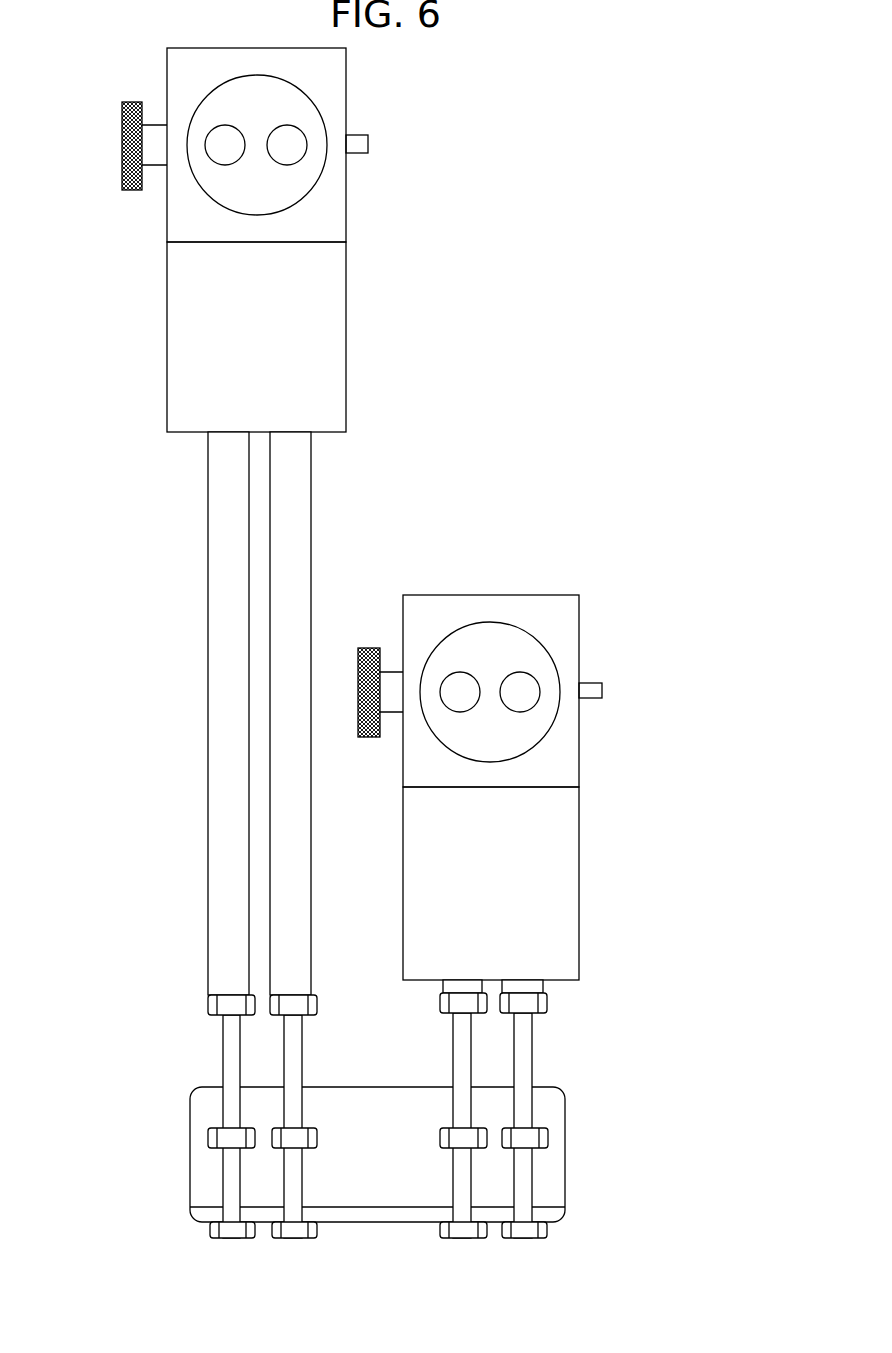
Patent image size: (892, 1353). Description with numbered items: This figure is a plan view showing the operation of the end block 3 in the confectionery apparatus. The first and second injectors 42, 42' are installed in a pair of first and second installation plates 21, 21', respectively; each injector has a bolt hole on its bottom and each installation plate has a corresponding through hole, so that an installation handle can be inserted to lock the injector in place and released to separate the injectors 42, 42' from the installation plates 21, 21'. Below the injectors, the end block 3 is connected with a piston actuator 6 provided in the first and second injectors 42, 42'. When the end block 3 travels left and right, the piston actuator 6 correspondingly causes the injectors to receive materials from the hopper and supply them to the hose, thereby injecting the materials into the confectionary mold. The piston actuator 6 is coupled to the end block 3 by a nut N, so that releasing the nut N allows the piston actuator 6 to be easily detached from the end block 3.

The second injector 42' is at (283, 145).
The second installation plate 21' is at (216, 337).
The first injector 42 is at (520, 691).
The first installation plate 21 is at (542, 883).
The piston actuator 6 is at (455, 987).
The nut N is at (528, 1140).
The end block 3 is at (563, 1185).